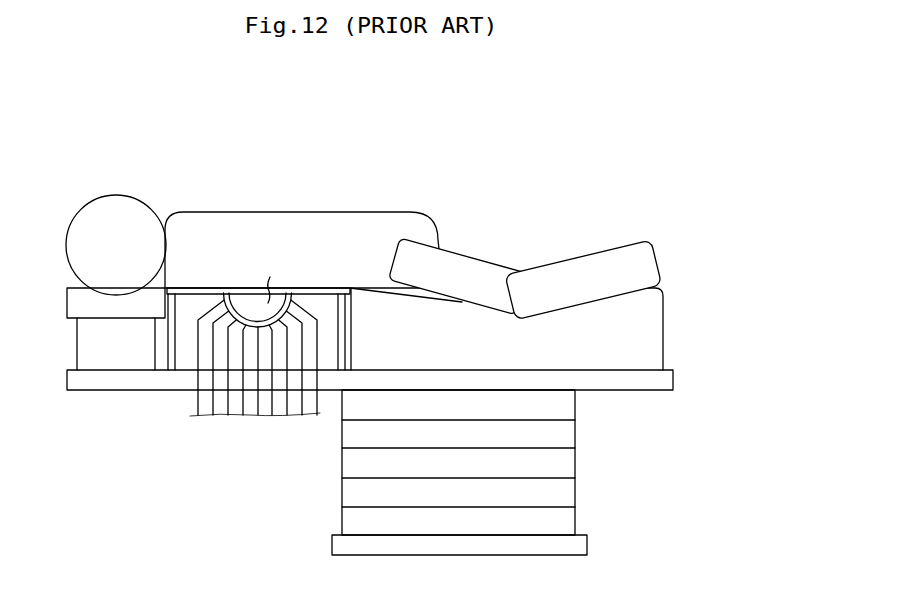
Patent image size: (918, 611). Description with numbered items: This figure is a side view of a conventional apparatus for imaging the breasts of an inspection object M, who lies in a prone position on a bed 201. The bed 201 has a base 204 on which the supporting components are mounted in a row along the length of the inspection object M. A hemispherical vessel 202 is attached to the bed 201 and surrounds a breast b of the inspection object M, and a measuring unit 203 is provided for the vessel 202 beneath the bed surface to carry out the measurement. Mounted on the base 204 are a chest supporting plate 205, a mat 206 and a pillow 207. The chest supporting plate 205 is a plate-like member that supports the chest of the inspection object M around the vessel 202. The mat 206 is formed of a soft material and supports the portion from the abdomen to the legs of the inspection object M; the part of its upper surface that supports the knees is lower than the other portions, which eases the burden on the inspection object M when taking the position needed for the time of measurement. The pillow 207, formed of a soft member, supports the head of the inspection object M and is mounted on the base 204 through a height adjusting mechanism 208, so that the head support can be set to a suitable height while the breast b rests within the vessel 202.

The bed 201 is at (417, 372).
The hemispherical vessel 202 is at (237, 292).
The measuring unit 203 is at (195, 352).
The base 204 is at (633, 384).
The chest supporting plate 205 is at (322, 288).
The mat 206 is at (653, 337).
The pillow 207 is at (65, 293).
The height adjusting mechanism 208 is at (80, 345).
The breast b is at (278, 280).
The inspection object M is at (650, 247).